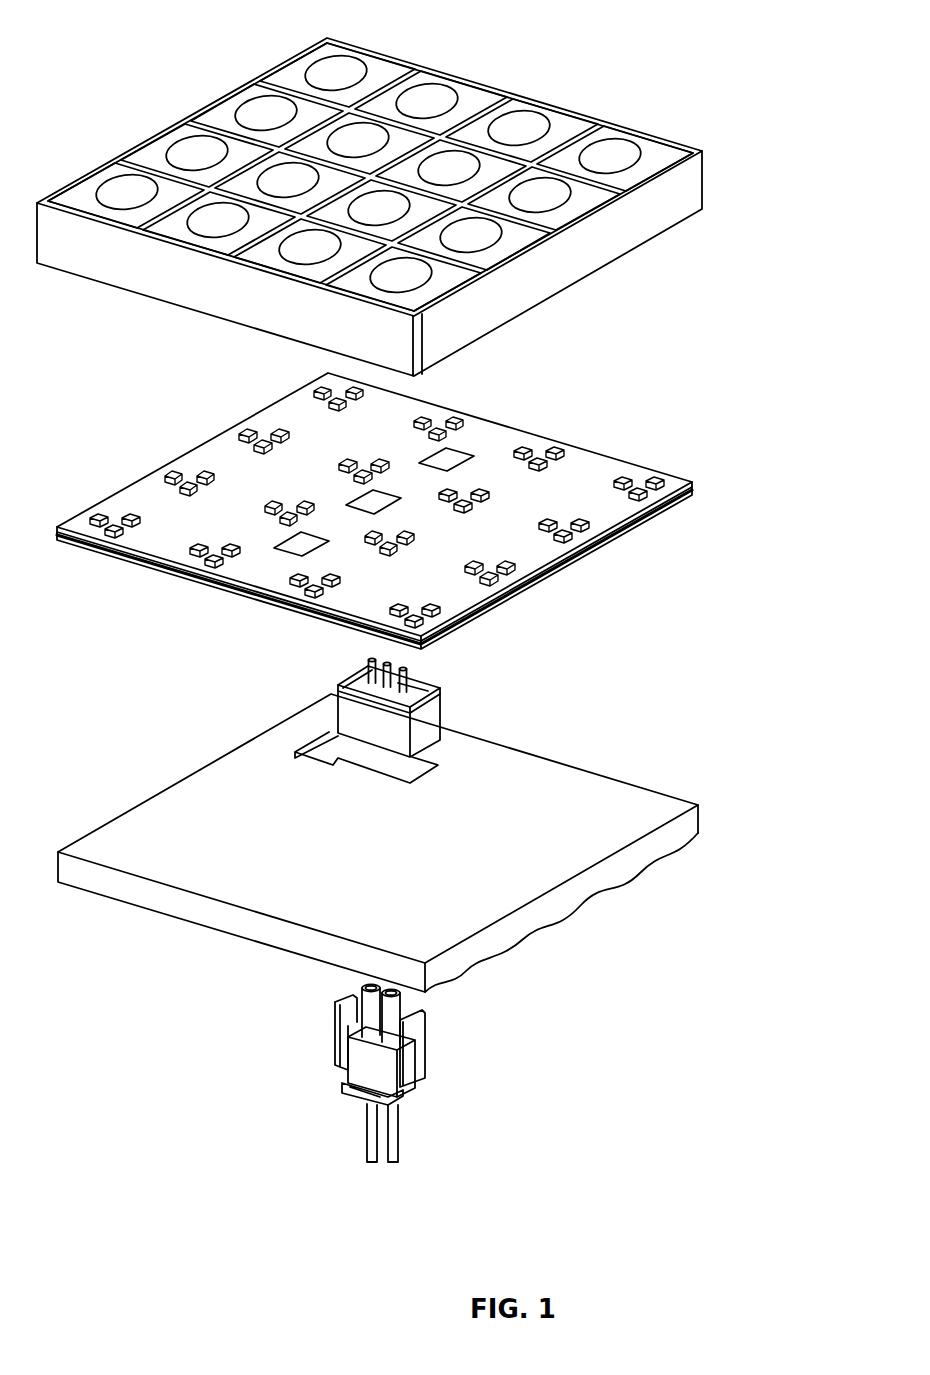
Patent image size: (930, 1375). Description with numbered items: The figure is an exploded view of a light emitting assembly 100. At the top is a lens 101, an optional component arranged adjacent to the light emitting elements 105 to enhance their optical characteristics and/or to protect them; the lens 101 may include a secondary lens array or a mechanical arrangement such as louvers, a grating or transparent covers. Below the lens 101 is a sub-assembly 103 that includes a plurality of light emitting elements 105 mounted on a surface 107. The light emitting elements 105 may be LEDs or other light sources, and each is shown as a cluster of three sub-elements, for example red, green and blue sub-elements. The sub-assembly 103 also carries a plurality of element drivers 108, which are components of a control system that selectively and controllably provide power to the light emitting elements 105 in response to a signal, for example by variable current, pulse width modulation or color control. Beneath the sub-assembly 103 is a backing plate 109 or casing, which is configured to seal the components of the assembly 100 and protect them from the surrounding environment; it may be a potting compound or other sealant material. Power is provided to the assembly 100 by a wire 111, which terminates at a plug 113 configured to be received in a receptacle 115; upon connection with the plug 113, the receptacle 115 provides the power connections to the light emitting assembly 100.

The light emitting assembly 100 is at (112, 40).
The lens 101 is at (680, 215).
The sub-assembly 103 is at (558, 594).
The light emitting elements 105 is at (648, 488).
The surface 107 is at (588, 462).
The element drivers 108 is at (450, 458).
The backing plate 109 is at (646, 797).
The wire 111 is at (398, 1134).
The plug 113 is at (417, 1034).
The receptacle 115 is at (431, 719).